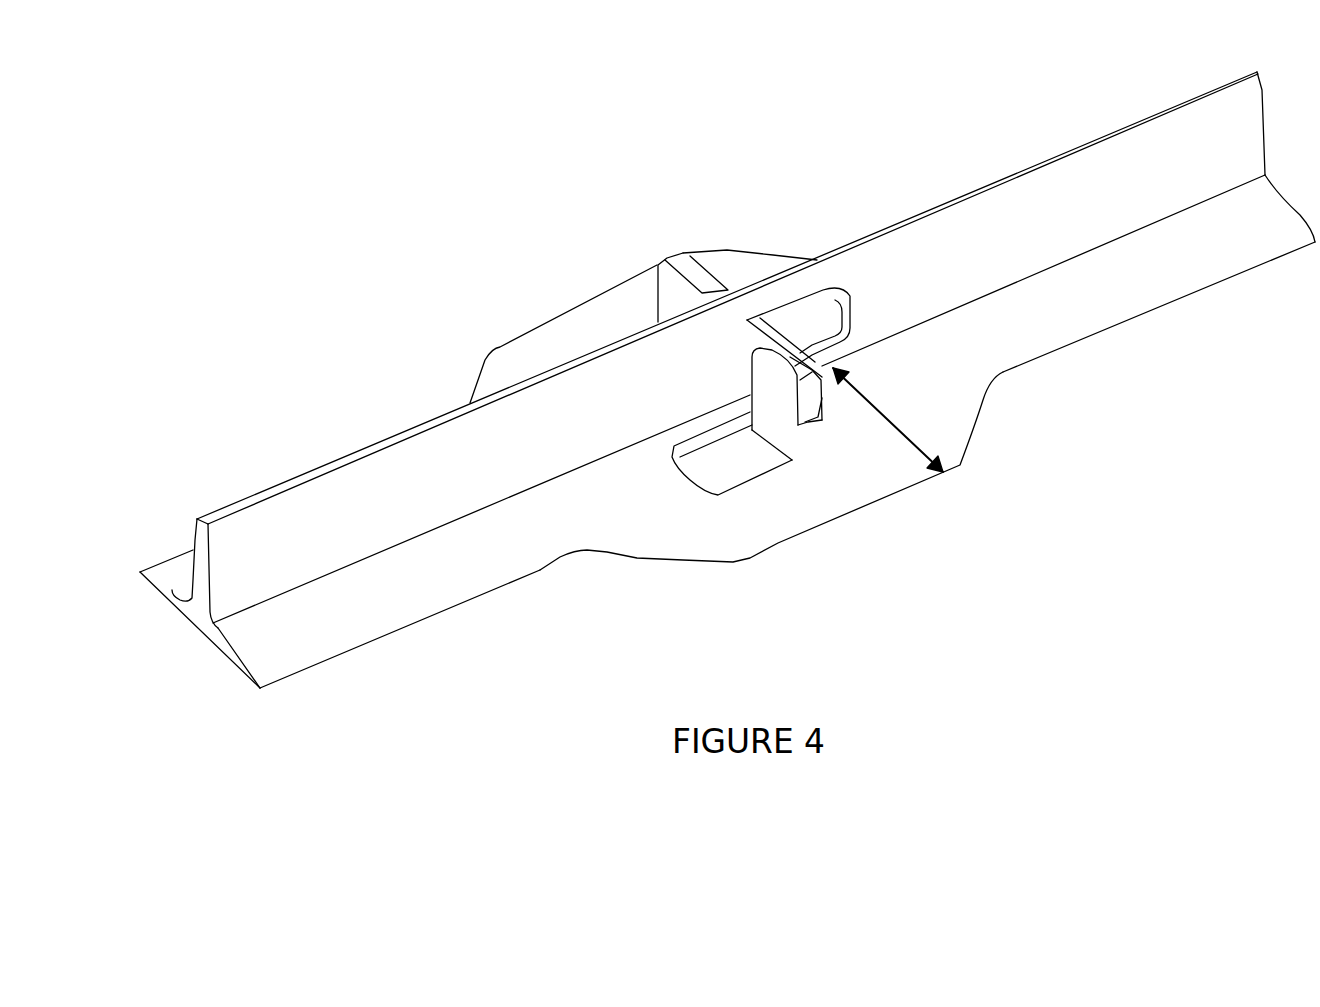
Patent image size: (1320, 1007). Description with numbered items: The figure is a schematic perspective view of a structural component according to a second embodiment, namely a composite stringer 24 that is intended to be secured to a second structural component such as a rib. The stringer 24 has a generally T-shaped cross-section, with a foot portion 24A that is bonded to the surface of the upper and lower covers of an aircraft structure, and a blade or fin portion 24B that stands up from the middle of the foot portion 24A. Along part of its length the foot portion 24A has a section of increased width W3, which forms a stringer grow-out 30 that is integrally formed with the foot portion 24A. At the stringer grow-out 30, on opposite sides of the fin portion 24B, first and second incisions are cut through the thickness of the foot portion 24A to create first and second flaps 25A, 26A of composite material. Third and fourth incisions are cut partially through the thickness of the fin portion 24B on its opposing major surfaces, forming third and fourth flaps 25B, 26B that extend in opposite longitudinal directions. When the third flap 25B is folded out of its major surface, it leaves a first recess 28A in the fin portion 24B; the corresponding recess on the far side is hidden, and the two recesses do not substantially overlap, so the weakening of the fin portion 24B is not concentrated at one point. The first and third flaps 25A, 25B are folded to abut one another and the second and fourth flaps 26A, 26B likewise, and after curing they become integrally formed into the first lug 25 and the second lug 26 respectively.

The stringer 24 is at (725, 404).
The foot portion 24A is at (365, 622).
The fin portion 24B is at (307, 507).
The first lug 25 is at (855, 401).
The first flap 25A is at (815, 397).
The third flap 25B is at (795, 440).
The second lug 26 is at (693, 240).
The second flap 26A is at (713, 278).
The fourth flap 26B is at (668, 283).
The first recess 28A is at (827, 310).
The stringer grow-out 30 is at (903, 475).
The increased width W3 is at (888, 420).